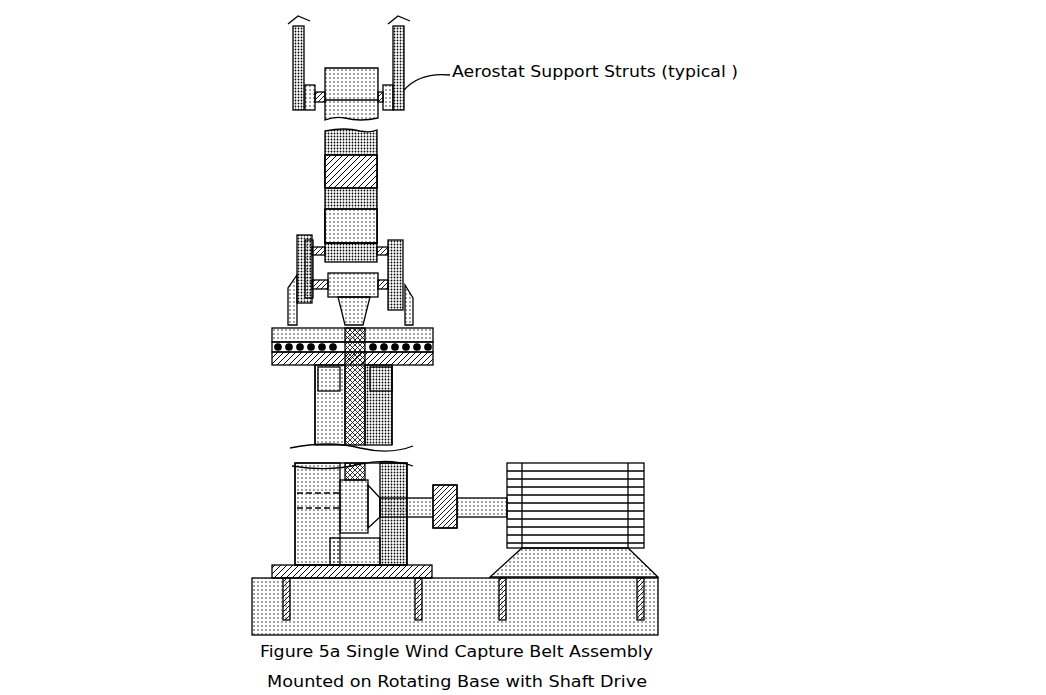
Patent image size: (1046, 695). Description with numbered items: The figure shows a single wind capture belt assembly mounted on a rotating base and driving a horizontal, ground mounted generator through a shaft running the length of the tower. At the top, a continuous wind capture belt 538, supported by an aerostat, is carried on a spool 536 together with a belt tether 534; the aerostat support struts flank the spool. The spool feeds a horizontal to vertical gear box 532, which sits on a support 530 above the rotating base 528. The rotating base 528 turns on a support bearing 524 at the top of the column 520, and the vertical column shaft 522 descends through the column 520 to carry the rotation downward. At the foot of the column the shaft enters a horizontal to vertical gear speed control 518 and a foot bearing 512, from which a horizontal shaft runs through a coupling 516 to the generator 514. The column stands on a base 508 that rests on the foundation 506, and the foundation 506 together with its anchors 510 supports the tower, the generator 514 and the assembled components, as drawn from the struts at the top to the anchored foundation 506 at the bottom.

The wind capture belt 538 is at (378, 168).
The spool 536 is at (400, 240).
The belt tether 534 is at (382, 250).
The horizontal to vertical gear box 532 is at (360, 273).
The support 530 is at (413, 308).
The rotating base 528 is at (433, 332).
The support bearing 524 is at (433, 360).
The vertical column shaft 522 is at (392, 400).
The column 520 is at (392, 430).
The horizontal to vertical gear speed control 518 is at (340, 482).
The coupling 516 is at (447, 485).
The generator 514 is at (659, 517).
The Foot Bearing 512 is at (330, 555).
The anchors 510 is at (288, 583).
The Base 508 is at (650, 578).
The foundation 506 is at (658, 615).